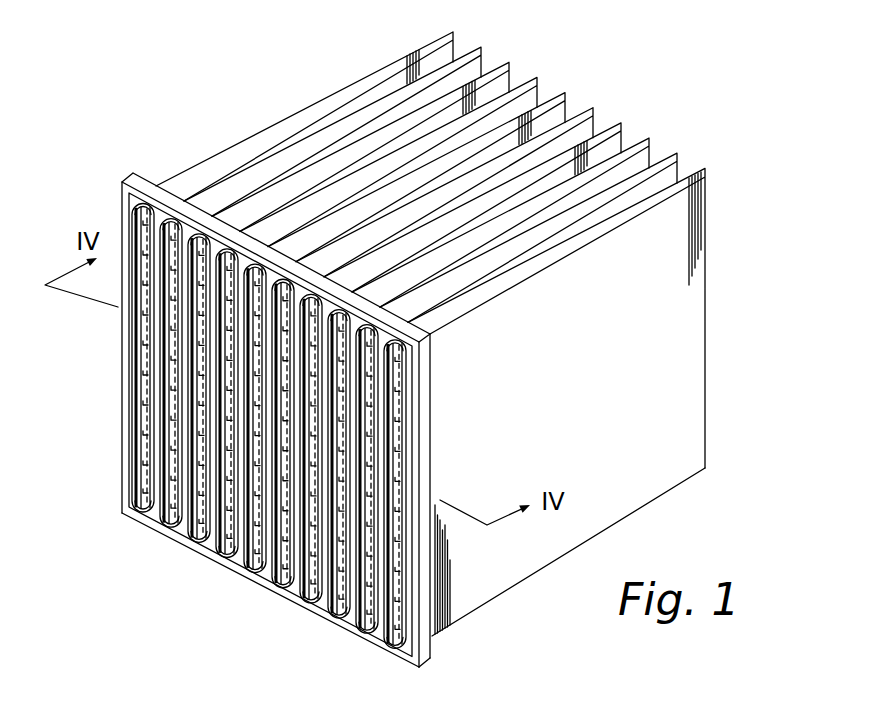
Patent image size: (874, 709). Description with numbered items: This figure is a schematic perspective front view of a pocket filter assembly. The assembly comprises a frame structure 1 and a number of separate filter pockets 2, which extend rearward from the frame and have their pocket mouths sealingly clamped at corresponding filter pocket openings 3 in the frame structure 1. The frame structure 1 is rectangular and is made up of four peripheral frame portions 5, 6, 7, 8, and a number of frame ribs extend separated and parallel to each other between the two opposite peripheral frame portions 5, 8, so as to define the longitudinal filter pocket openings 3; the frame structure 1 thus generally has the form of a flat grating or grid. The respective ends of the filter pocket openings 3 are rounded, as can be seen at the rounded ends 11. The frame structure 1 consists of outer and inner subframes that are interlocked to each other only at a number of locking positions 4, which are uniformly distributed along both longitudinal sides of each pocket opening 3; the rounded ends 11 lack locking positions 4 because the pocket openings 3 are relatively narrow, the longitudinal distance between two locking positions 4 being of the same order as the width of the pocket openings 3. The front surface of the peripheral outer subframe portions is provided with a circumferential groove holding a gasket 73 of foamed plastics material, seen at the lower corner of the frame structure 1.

The frame structure 1 is at (441, 433).
The filter pocket 2 is at (638, 484).
The filter pocket opening 3 is at (150, 440).
The locking position 4 is at (130, 346).
The peripheral frame portion 5 is at (146, 186).
The peripheral frame portion 6 is at (128, 386).
The peripheral frame portion 7 is at (183, 533).
The peripheral frame portion 8 is at (428, 393).
The rounded end 11 is at (152, 232).
The gasket 73 is at (432, 645).